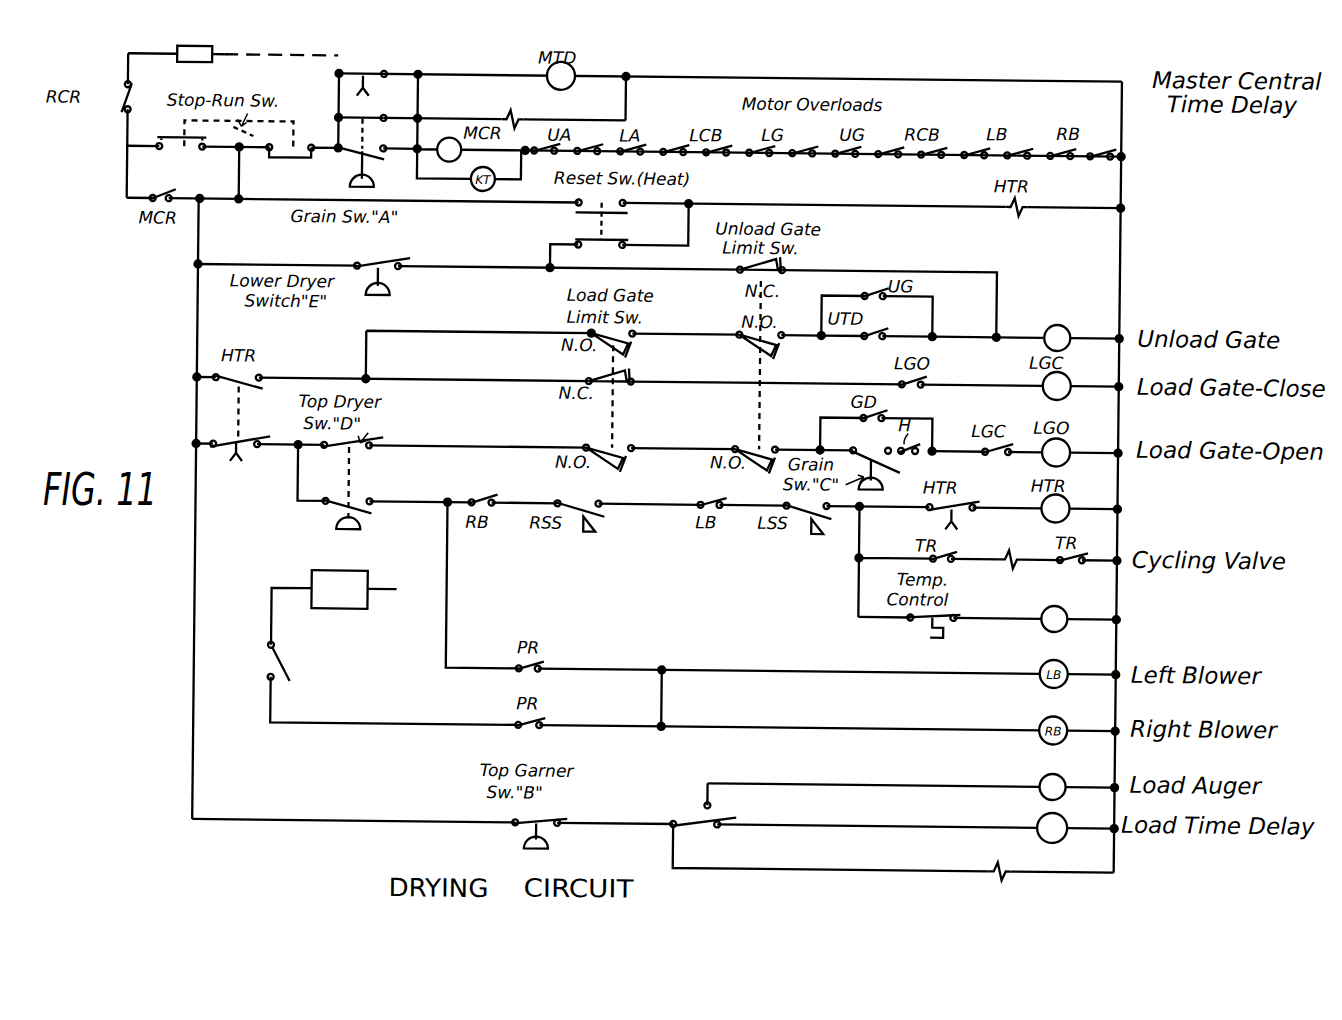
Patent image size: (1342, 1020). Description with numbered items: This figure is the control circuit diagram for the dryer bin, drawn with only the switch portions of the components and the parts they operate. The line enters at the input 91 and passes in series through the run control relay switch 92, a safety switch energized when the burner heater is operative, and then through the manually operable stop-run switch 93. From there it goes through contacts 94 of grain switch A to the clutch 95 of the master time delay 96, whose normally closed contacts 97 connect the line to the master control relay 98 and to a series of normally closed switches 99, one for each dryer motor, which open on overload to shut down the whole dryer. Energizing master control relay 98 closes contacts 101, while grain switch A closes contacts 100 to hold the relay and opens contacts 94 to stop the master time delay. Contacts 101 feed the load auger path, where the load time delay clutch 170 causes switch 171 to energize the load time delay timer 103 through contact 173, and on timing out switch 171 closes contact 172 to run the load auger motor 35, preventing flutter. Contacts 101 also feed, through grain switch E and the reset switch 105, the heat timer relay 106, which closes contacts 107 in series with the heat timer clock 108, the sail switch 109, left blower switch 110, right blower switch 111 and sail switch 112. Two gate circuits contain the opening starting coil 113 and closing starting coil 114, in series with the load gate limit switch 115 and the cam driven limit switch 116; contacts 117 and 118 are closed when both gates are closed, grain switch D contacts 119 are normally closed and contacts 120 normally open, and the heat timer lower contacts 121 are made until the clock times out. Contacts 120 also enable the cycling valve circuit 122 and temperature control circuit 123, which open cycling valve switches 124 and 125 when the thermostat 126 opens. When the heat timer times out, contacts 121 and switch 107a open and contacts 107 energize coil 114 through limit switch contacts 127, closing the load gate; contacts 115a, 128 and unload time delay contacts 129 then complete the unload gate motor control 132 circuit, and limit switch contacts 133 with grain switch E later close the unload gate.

The input to the drying circuit 91 is at (125, 66).
The run control relay switch 92 is at (117, 100).
The stop-run switch 93 is at (224, 135).
The contacts of grain switch A 94 is at (364, 116).
The clutch of master time delay 95 is at (512, 109).
The master time delay 96 is at (572, 67).
The master time delay contacts 97 is at (370, 72).
The master control relay 98 is at (441, 156).
The normally closed switches 99 is at (975, 122).
The contacts of grain switch A 100 is at (350, 163).
The master control relay contacts 101 is at (160, 193).
The load time delay timer 103 is at (1066, 834).
The reset switch 105 is at (574, 211).
The heat timer relay 106 is at (1019, 207).
The heat timer relay contacts 107 is at (255, 375).
The heat timer switch 107a is at (967, 499).
The heat timer clock 108 is at (1070, 500).
The wind or sail switch 109 is at (814, 526).
The left blower switch 110 is at (714, 496).
The right blower switch 111 is at (490, 496).
The wind or sail switch 112 is at (597, 528).
The starting coil 113 is at (1069, 443).
The starting coil 114 is at (1069, 376).
The limit switch 115 is at (613, 361).
The contacts 115a is at (640, 341).
The cam driven limit switch 116 is at (763, 399).
The pair of contacts 117 is at (596, 440).
The pair of contacts 118 is at (745, 440).
The pair of contacts 119 is at (354, 448).
The pair of contacts 120 is at (341, 506).
The lower set of contacts 121 is at (217, 448).
The cycling valve circuit 122 is at (1013, 563).
The temperature control circuit 123 is at (1046, 624).
The cycling valve switch 124 is at (955, 551).
The cycling valve switch 125 is at (1081, 557).
The thermostat 126 is at (929, 634).
The load gate limit switch contacts 127 is at (620, 385).
The contacts 128 is at (776, 350).
The pair of contacts 129 is at (875, 336).
The unload gate motor control 132 is at (1066, 317).
The unload gate limit switch contacts 133 is at (785, 262).
The load time delay clutch 170 is at (1005, 874).
The switch 171 is at (694, 818).
The contact 172 is at (717, 800).
The contact 173 is at (728, 824).
The load auger motor 35 is at (1047, 767).